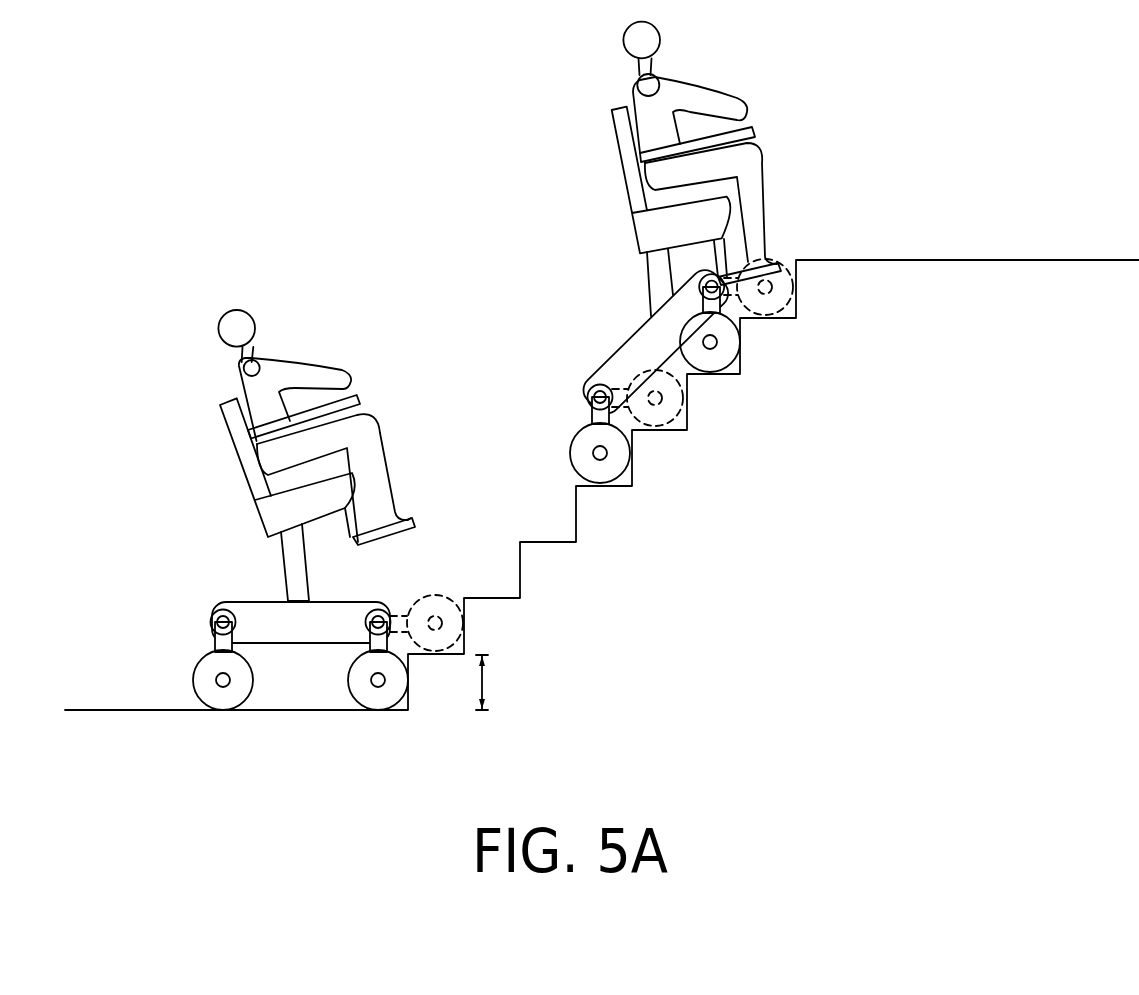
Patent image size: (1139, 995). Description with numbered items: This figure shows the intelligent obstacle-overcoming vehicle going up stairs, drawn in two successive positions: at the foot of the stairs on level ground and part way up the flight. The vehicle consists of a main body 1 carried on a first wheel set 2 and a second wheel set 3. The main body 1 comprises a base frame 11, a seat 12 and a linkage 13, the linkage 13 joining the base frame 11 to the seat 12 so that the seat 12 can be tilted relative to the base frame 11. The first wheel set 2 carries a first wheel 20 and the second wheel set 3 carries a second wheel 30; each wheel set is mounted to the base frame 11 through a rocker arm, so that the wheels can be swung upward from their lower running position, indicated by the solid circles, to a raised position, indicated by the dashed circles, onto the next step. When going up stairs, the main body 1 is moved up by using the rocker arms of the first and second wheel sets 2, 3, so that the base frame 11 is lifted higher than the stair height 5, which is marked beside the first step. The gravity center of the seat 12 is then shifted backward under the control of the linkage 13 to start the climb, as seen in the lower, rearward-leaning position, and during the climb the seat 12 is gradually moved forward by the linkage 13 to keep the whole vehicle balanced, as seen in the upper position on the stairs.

The main body 1 is at (203, 456).
The first wheel set 2 is at (397, 593).
The second wheel set 3 is at (180, 632).
The stair height 5 is at (484, 681).
The base frame 11 is at (240, 605).
The seat 12 is at (260, 505).
The linkage 13 is at (282, 566).
The first wheel 20 is at (408, 695).
The second wheel 30 is at (207, 701).